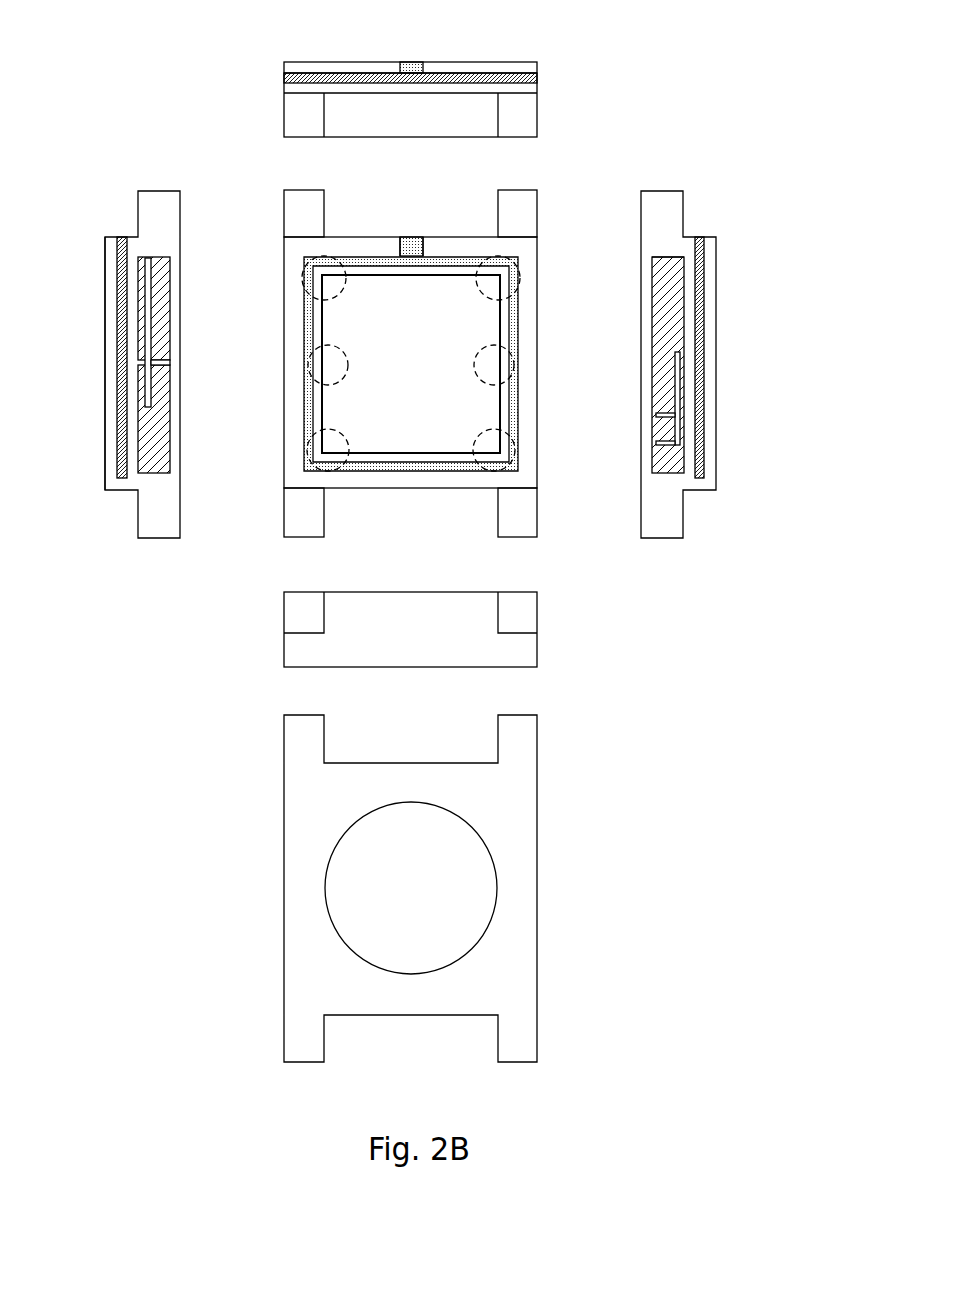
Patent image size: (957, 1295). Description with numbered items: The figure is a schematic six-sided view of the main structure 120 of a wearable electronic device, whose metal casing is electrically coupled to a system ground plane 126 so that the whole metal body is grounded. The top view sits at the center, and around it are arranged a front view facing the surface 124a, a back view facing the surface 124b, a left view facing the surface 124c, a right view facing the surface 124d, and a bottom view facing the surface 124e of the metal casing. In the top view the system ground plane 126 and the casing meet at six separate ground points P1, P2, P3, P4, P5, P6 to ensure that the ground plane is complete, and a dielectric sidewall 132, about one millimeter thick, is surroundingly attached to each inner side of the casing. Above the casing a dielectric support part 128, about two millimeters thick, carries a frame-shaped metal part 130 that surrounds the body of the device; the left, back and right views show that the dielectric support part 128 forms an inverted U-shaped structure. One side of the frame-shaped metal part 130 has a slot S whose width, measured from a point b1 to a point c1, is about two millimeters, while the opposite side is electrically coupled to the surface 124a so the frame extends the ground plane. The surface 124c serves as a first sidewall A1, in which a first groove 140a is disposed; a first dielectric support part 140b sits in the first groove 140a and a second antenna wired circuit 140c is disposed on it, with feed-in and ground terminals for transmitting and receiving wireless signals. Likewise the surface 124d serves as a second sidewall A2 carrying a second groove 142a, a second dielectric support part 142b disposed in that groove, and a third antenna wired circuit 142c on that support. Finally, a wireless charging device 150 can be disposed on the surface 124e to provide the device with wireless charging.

The main structure 120 is at (160, 48).
The surface of the metal casing 124a is at (408, 490).
The surface of the metal casing 124b is at (465, 138).
The surface of the metal casing 124c is at (284, 407).
The surface of the metal casing 124d is at (641, 404).
The surface of the metal casing 124e is at (538, 812).
The system ground plane 126 is at (428, 376).
The dielectric support part 128 is at (537, 80).
The frame-shaped metal part 130 is at (537, 67).
The dielectric sidewall 132 is at (540, 463).
The first groove 140a is at (172, 292).
The first dielectric support part 140b is at (172, 466).
The second antenna wired circuit 140c is at (148, 360).
The second groove 142a is at (688, 292).
The second dielectric support part 142b is at (688, 327).
The third antenna wired circuit 142c is at (680, 393).
The wireless charging device 150 is at (428, 900).
The slot S is at (412, 235).
The point b1 is at (390, 232).
The point c1 is at (432, 232).
The ground point P1 is at (337, 286).
The ground point P2 is at (340, 372).
The ground point P3 is at (339, 441).
The ground point P4 is at (486, 286).
The ground point P5 is at (483, 372).
The ground point P6 is at (484, 441).
The first sidewall A1 is at (181, 243).
The second sidewall A2 is at (641, 241).